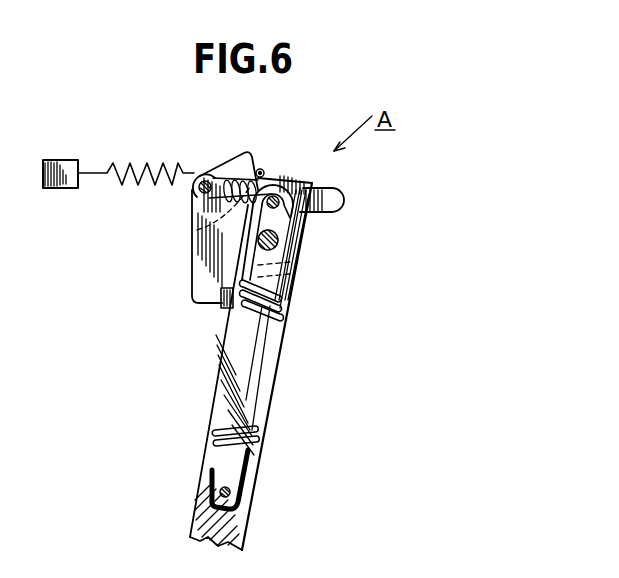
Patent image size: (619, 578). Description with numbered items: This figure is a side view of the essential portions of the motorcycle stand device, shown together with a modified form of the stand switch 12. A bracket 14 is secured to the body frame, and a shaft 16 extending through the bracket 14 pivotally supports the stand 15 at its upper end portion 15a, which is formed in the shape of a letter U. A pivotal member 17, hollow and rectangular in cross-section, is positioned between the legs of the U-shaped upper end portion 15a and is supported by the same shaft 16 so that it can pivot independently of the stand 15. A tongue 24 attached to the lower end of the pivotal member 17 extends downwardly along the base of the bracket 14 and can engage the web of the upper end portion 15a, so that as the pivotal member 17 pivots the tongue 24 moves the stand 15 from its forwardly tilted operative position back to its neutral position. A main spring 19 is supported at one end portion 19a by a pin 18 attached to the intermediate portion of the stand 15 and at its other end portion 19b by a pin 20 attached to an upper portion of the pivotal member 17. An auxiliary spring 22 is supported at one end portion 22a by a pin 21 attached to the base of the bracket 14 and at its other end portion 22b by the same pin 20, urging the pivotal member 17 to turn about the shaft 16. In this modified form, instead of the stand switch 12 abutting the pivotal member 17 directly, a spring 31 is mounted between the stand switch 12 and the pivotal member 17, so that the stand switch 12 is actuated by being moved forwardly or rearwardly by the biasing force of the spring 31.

The stand switch 12 is at (64, 162).
The spring 31 is at (140, 165).
The pin 21 is at (197, 177).
The auxiliary spring 22 is at (198, 228).
The end portion of auxiliary spring 22a is at (193, 192).
The other end portion of auxiliary spring 22b is at (299, 216).
The bracket 14 is at (193, 248).
The tongue 24 is at (222, 301).
The pin 20 is at (277, 160).
The main spring 19 is at (277, 358).
The end portion of main spring 19a is at (253, 454).
The other end portion of main spring 19b is at (288, 183).
The pivotal member 17 is at (312, 184).
The shaft 16 is at (280, 240).
The stand 15 is at (266, 417).
The upper end portion of stand 15a is at (294, 278).
The pin 18 is at (250, 495).